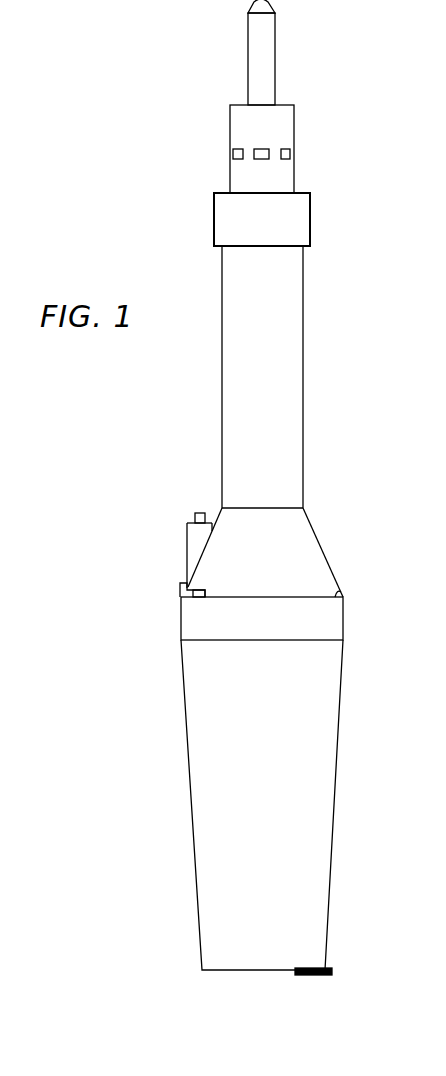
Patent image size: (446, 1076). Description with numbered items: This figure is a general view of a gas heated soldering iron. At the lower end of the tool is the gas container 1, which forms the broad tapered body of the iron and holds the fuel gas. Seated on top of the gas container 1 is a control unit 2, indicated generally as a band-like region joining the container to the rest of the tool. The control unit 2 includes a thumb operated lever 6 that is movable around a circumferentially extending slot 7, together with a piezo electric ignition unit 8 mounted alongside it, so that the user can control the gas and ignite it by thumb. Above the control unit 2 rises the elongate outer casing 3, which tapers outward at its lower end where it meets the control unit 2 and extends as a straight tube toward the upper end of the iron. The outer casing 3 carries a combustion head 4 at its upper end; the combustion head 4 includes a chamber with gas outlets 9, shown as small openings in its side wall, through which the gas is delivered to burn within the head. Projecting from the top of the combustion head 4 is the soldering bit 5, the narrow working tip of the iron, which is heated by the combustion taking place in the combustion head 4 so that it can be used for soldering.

The gas container 1 is at (193, 710).
The control unit 2 is at (176, 616).
The outer casing 3 is at (302, 312).
The combustion head 4 is at (291, 175).
The soldering bit 5 is at (272, 50).
The thumb operated lever 6 is at (183, 589).
The circumferentially extending slot 7 is at (199, 591).
The piezo electric ignition unit 8 is at (198, 532).
The gas outlets 9 is at (290, 151).